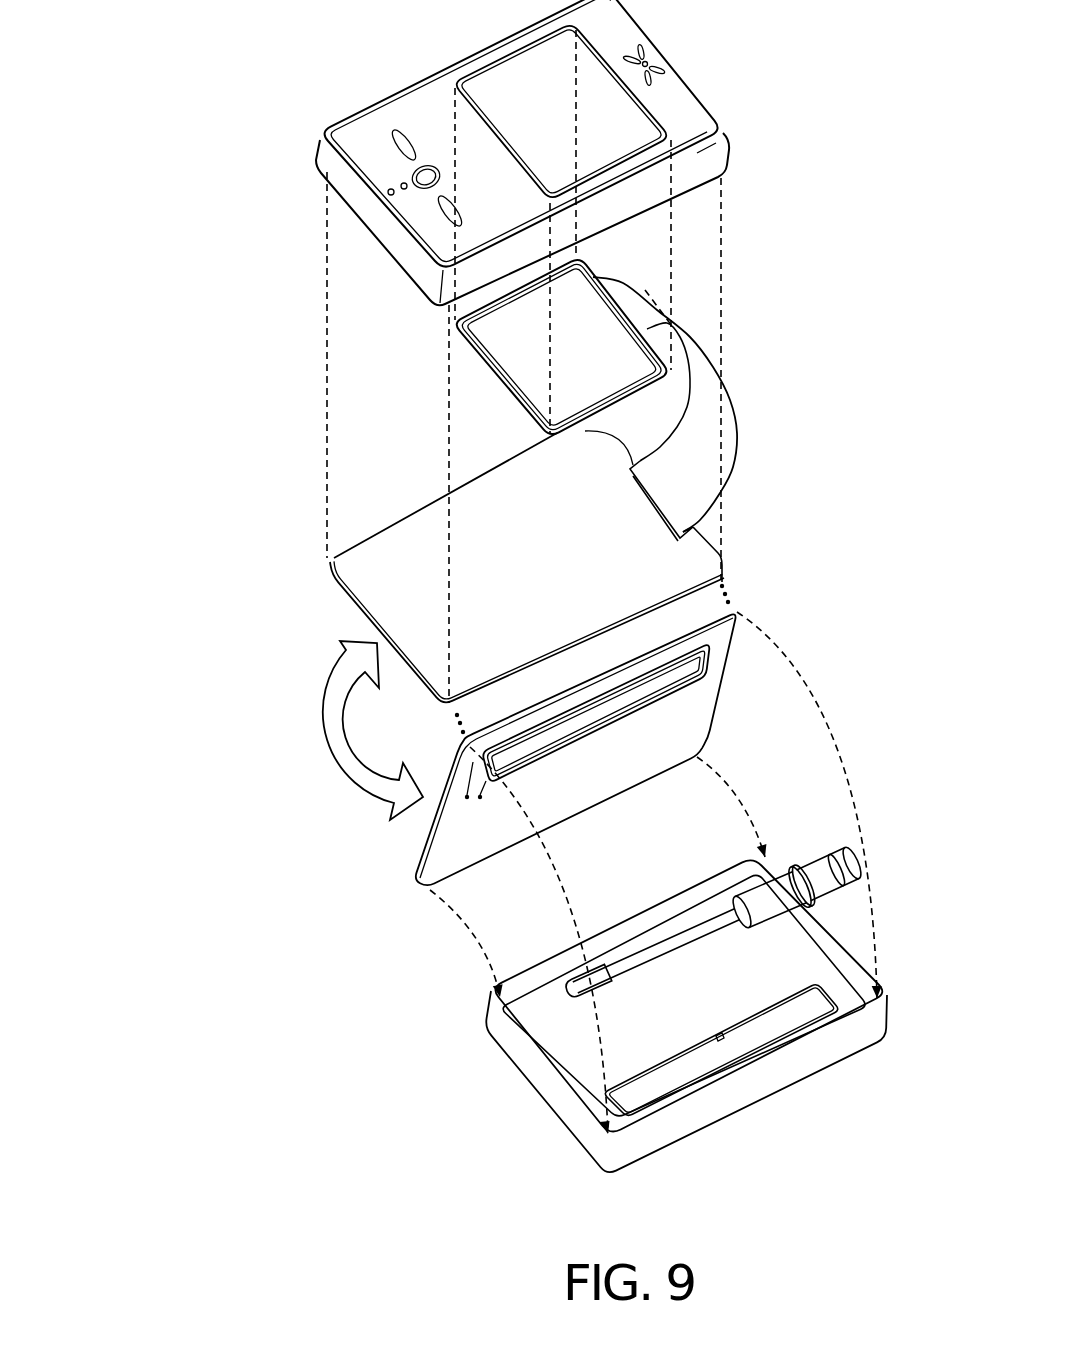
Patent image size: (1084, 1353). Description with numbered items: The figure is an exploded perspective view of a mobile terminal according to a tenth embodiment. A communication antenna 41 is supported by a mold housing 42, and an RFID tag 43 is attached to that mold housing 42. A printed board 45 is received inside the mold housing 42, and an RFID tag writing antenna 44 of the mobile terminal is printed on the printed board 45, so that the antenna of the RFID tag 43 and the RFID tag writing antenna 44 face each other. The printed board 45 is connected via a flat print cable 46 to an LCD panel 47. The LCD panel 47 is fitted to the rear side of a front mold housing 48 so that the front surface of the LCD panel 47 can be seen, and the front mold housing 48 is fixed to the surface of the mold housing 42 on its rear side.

The communication antenna 41 is at (850, 853).
The mold housing 42 is at (688, 1016).
The RFID tag 43 is at (843, 970).
The RFID tag writing antenna 44 is at (717, 657).
The printed board 45 is at (463, 677).
The flat print cable 46 is at (735, 404).
The LCD panel 47 is at (595, 266).
The front mold housing 48 is at (690, 110).